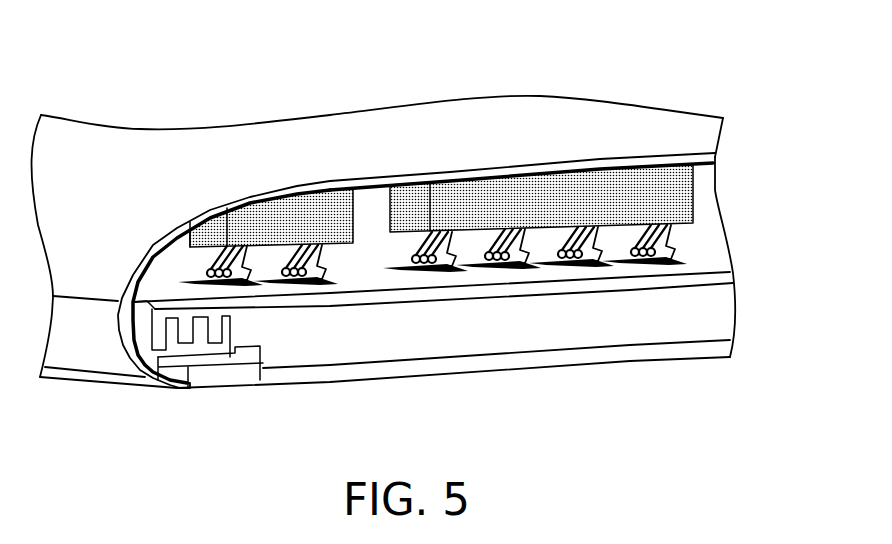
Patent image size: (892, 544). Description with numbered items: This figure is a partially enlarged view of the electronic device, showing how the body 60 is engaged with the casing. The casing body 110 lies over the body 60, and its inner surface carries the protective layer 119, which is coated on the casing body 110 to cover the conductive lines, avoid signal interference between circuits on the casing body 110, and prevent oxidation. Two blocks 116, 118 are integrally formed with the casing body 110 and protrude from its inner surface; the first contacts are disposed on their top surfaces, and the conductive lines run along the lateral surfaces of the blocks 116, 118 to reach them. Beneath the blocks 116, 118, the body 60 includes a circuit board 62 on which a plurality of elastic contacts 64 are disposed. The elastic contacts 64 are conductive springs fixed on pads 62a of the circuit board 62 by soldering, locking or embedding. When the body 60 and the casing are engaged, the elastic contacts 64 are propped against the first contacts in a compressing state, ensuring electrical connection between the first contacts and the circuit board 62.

The body 60 is at (743, 319).
The casing body 110 is at (715, 157).
The protective layer 119 is at (714, 165).
The block 116 is at (295, 220).
The block 118 is at (562, 197).
The elastic contacts 64 is at (688, 235).
The pads 62a is at (686, 258).
The circuit board 62 is at (728, 284).